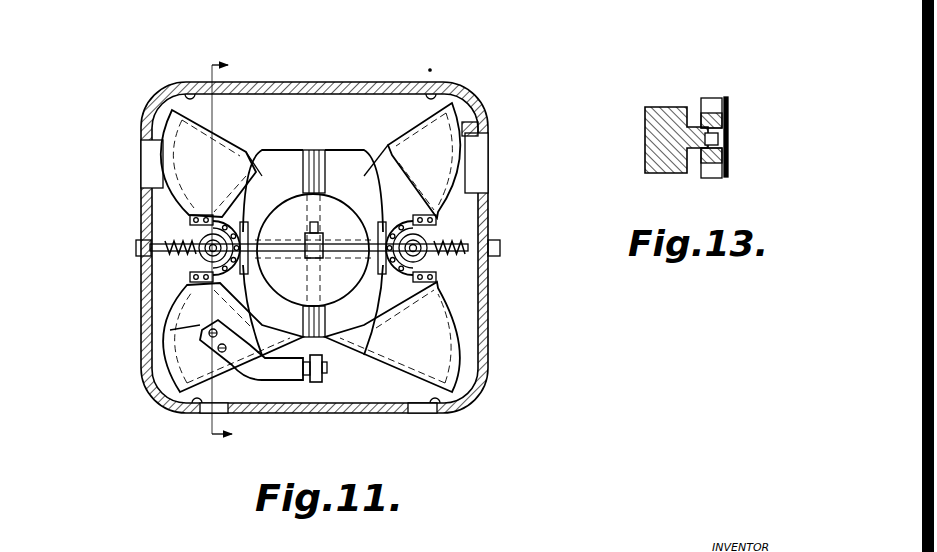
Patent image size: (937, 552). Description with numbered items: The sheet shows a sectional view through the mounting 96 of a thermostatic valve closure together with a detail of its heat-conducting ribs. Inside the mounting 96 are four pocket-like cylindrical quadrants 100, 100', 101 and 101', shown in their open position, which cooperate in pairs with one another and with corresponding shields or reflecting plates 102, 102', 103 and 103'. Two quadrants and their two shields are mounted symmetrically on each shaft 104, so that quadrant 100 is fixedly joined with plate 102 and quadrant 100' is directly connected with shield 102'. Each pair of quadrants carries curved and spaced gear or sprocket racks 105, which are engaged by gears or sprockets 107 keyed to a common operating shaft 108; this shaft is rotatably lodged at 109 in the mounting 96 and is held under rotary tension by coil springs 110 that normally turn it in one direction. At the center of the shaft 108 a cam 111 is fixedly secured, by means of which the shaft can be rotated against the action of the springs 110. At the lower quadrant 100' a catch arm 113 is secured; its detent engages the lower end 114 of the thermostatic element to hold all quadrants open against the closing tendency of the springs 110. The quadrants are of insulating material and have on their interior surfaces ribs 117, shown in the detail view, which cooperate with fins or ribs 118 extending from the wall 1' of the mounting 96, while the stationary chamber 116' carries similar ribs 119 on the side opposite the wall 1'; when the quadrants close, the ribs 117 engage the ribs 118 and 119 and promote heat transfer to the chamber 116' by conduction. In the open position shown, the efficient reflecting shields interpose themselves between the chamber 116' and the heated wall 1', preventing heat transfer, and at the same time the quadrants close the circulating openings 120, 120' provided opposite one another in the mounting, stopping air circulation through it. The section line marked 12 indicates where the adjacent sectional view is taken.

In FIG. 11, the mounting 96 is at (468, 100).
In FIG. 11, the pocket-like cylindrical quadrant 100 is at (113, 164).
In FIG. 11, the pocket-like cylindrical quadrant 100' is at (137, 343).
In FIG. 11, the pocket-like cylindrical quadrant 101 is at (351, 160).
In FIG. 11, the pocket-like cylindrical quadrant 101' is at (355, 337).
In FIG. 11, the shield or reflecting plate 102 is at (267, 310).
In FIG. 11, the shield or reflecting plate 102' is at (269, 149).
In FIG. 11, the shield or reflecting plate 103 is at (358, 310).
In FIG. 11, the shield or reflecting plate 103' is at (361, 149).
In FIG. 11, the shaft 104 is at (205, 262).
In FIG. 11, the curved gear or sprocket rack 105 is at (195, 217).
In FIG. 11, the gear or sprocket 107 is at (317, 191).
In FIG. 11, the common operating shaft 108 is at (355, 275).
In FIG. 11, the bearing location of operating shaft 109 is at (150, 247).
In FIG. 11, the coil spring 110 is at (165, 236).
In FIG. 11, the cam 111 is at (306, 236).
In FIG. 11, the catch arm 113 is at (288, 372).
In FIG. 11, the lower end of thermostatic element 114 is at (318, 382).
In FIG. 13, the stationary chamber 116' is at (765, 137).
In FIG. 13, the rib 117 is at (745, 78).
In FIG. 13, the fin or rib 118 is at (700, 125).
In FIG. 11, the rib 119 is at (314, 150).
In FIG. 13, the rib 119 is at (728, 135).
In FIG. 11, the circulating opening 120 is at (296, 157).
In FIG. 11, the circulating opening 120' is at (382, 427).
In FIG. 11, the section line 12 is at (221, 247).
In FIG. 11, the wall of mounting 1' is at (400, 381).